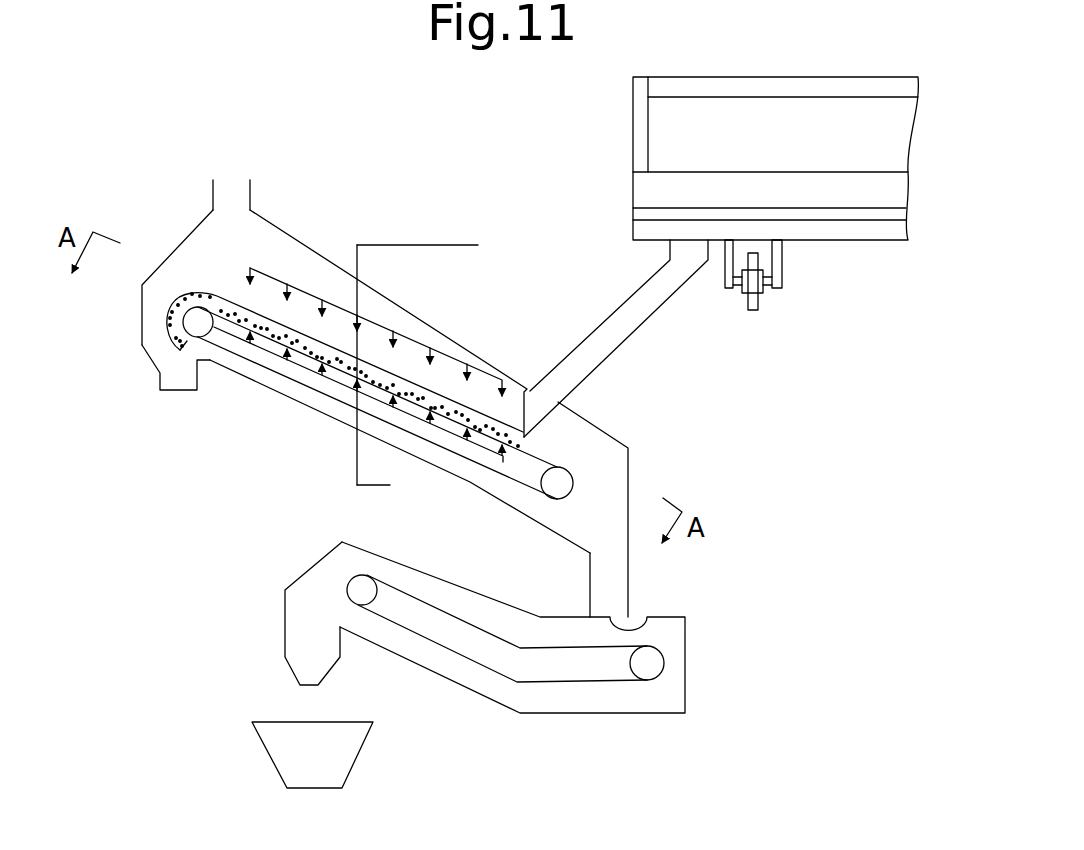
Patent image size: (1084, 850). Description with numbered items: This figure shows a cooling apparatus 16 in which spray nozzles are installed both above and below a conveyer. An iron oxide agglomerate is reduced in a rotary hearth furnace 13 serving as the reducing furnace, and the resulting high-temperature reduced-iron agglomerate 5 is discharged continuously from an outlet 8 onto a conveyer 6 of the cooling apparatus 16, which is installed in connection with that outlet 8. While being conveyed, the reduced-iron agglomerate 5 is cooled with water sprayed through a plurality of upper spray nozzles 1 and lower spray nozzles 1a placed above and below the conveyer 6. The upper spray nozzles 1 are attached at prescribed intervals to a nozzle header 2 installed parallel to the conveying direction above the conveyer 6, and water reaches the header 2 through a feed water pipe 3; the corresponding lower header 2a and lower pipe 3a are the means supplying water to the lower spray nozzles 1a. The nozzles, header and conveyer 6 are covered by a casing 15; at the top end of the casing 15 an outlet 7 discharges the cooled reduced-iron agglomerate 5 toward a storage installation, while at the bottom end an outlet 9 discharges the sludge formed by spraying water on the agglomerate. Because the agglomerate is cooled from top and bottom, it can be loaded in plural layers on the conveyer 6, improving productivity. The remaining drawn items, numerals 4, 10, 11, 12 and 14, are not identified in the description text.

The upper spray nozzles 1 is at (430, 354).
The lower spray nozzles 1a is at (250, 339).
The nozzle header 2 is at (277, 280).
The lower nozzle header 2a is at (287, 371).
The feed water pipe 3 is at (415, 245).
The lower feed water pipe 3a is at (388, 487).
The inlet opening 4 is at (232, 180).
The reduced-iron agglomerate 5 is at (230, 300).
The conveyer 6 is at (323, 402).
The reduced-iron agglomerate outlet 7 is at (173, 392).
The outlet 8 is at (680, 267).
The sludge outlet 9 is at (643, 617).
The discharge chute 10 is at (315, 687).
The conveyor housing 11 is at (685, 663).
The discharge conveyor 12 is at (565, 650).
The rotary hearth furnace 13 is at (633, 128).
The collecting container 14 is at (357, 762).
The casing 15 is at (425, 316).
The cooling apparatus 16 is at (363, 211).